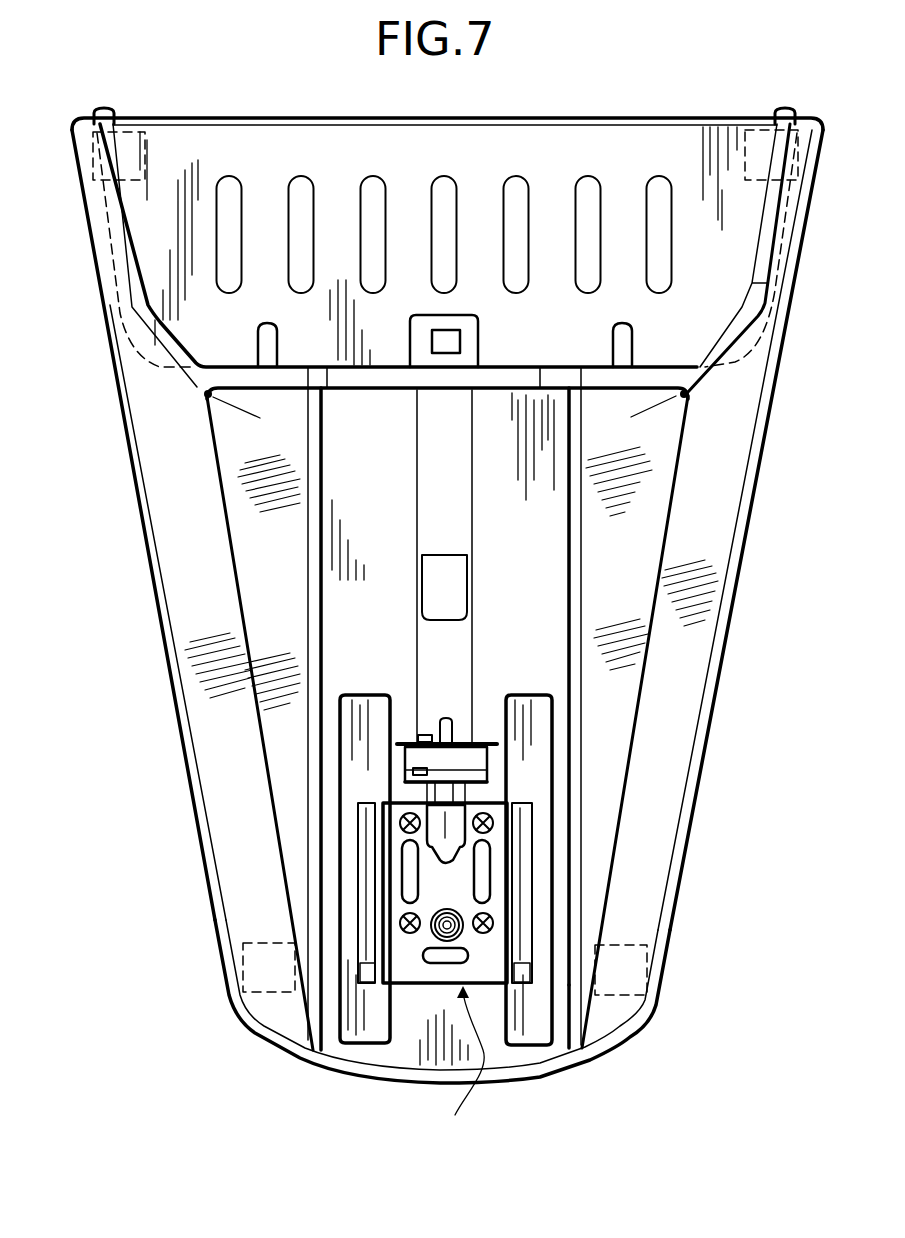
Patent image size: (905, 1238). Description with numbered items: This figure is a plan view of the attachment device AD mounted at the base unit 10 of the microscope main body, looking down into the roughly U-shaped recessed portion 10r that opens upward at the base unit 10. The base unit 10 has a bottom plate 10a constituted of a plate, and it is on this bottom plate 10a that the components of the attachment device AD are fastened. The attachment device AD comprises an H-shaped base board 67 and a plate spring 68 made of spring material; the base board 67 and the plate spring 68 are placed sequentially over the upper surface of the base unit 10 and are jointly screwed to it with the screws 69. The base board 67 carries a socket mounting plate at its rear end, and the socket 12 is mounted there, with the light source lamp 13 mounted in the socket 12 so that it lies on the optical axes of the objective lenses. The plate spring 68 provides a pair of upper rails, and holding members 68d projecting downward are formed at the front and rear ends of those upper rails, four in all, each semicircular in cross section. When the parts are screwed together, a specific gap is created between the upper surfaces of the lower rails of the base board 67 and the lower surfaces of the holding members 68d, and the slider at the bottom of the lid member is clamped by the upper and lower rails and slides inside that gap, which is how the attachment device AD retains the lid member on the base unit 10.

The base unit 10 is at (189, 763).
The recessed portion 10r is at (232, 575).
The bottom plate 10a is at (510, 1070).
The base board 67 is at (523, 757).
The socket 12 is at (473, 768).
The light source lamp 13 is at (443, 838).
The plate spring 68 is at (508, 908).
The holding member 68d is at (565, 1050).
The screws 69 is at (410, 940).
The attachment device AD is at (444, 1068).